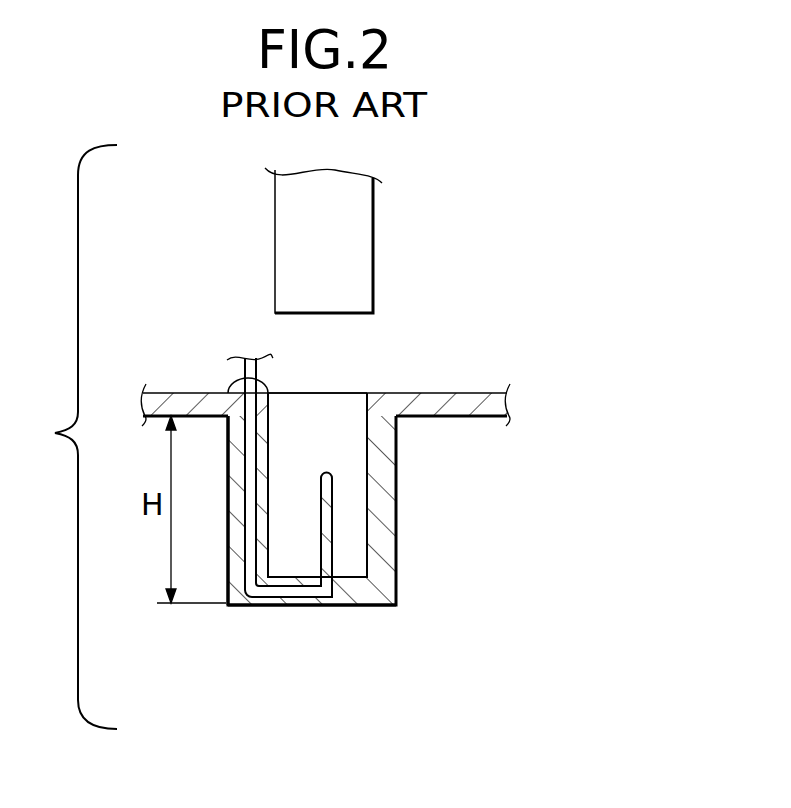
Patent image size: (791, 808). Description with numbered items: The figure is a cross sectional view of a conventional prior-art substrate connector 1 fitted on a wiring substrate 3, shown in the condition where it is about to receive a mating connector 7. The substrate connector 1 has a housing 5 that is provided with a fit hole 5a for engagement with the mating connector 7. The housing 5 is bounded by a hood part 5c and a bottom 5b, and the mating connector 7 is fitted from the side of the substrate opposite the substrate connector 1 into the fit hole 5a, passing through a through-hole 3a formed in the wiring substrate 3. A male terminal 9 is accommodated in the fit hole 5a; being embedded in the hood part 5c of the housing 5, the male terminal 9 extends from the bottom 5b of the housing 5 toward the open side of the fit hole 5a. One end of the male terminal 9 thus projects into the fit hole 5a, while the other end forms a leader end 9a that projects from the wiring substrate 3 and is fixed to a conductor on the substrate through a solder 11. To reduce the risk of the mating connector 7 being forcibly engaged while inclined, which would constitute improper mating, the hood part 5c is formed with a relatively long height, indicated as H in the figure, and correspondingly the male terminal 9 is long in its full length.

The substrate connector 1 is at (342, 557).
The wiring substrate 3 is at (478, 393).
The through-hole 3a is at (355, 393).
The housing 5 is at (395, 509).
The fit hole 5a is at (297, 537).
The bottom 5b is at (350, 606).
The hood part 5c is at (228, 538).
The mating connector 7 is at (373, 228).
The male terminal 9 is at (330, 441).
The leader end 9a is at (247, 358).
The solder 11 is at (230, 392).